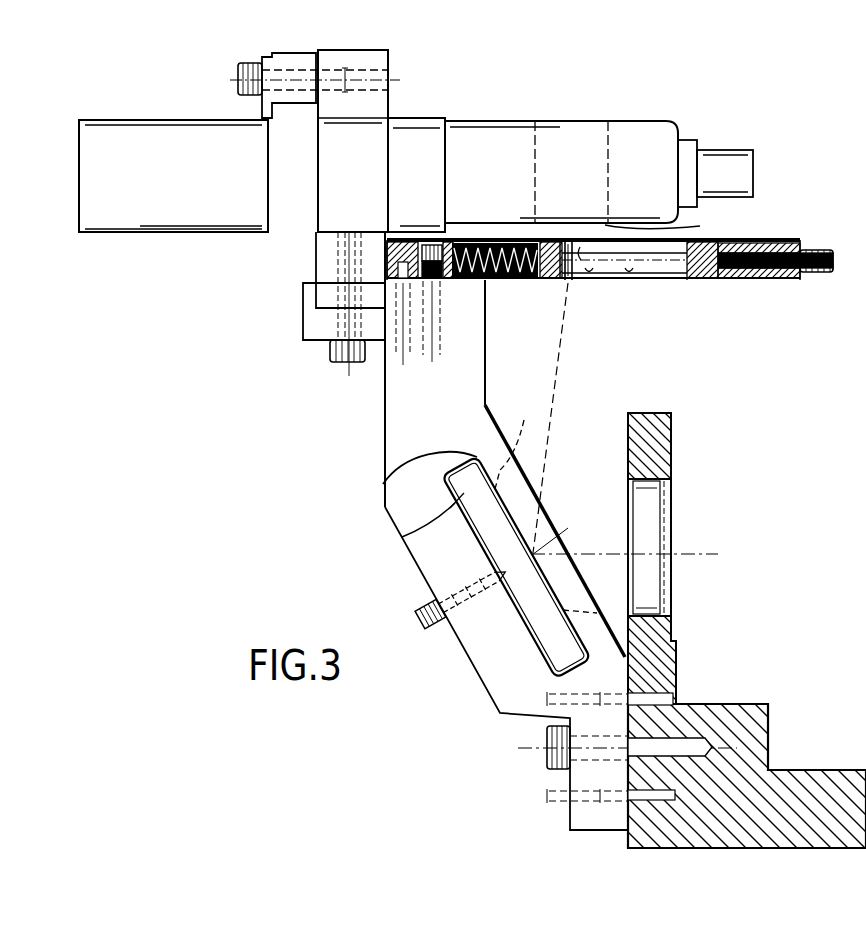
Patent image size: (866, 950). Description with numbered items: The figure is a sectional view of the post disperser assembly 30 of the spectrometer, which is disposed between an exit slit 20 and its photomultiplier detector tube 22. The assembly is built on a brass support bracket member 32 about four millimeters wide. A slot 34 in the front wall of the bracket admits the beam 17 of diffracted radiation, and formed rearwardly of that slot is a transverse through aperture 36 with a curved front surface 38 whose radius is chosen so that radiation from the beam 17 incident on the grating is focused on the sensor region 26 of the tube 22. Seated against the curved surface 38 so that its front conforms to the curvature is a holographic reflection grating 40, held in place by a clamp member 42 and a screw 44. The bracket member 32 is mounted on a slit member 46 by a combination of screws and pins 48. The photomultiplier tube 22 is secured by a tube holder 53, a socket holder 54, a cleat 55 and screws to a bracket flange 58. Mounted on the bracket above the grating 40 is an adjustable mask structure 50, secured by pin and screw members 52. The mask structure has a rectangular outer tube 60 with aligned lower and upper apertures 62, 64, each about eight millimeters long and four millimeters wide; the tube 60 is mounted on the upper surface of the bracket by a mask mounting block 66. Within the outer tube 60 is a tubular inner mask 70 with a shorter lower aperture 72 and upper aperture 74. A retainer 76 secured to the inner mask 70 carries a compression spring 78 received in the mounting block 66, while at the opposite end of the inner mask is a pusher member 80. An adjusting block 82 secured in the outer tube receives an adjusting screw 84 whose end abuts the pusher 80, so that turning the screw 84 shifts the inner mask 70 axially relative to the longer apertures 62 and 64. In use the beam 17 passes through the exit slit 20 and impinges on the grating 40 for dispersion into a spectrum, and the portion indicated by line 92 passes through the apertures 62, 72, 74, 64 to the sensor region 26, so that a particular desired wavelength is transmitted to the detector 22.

The beam 17 is at (694, 554).
The exit slit 20 is at (672, 425).
The photomultiplier detector tube 22 is at (495, 118).
The sensor region 26 is at (606, 224).
The post disperser assembly 30 is at (280, 503).
The support bracket member 32 is at (385, 452).
The slot 34 is at (515, 442).
The transverse through aperture 36 is at (384, 482).
The curved front surface 38 is at (578, 638).
The holographic reflection grating 40 is at (500, 497).
The clamp member 42 is at (402, 537).
The screw 44 is at (427, 609).
The slit member 46 is at (745, 704).
The screws and pins 48 is at (651, 699).
The adjustable mask structure 50 is at (712, 290).
The pin and screw members 52 is at (410, 272).
The tube holder 53 is at (190, 233).
The socket holder 54 is at (388, 103).
The cleat 55 is at (300, 57).
The bracket flange 58 is at (303, 320).
The rectangular outer tube 60 is at (650, 281).
The lower aperture of outer tube 62 is at (562, 281).
The upper aperture of outer tube 64 is at (565, 240).
The mask mounting block 66 is at (388, 243).
The tubular inner mask 70 is at (637, 282).
The lower aperture of inner mask 72 is at (593, 281).
The upper aperture of inner mask 74 is at (578, 222).
The retainer 76 is at (565, 282).
The compression spring 78 is at (503, 284).
The pusher member 80 is at (706, 284).
The adjusting block 82 is at (792, 280).
The adjusting screw 84 is at (813, 248).
The spectrum portion line 92 is at (556, 400).